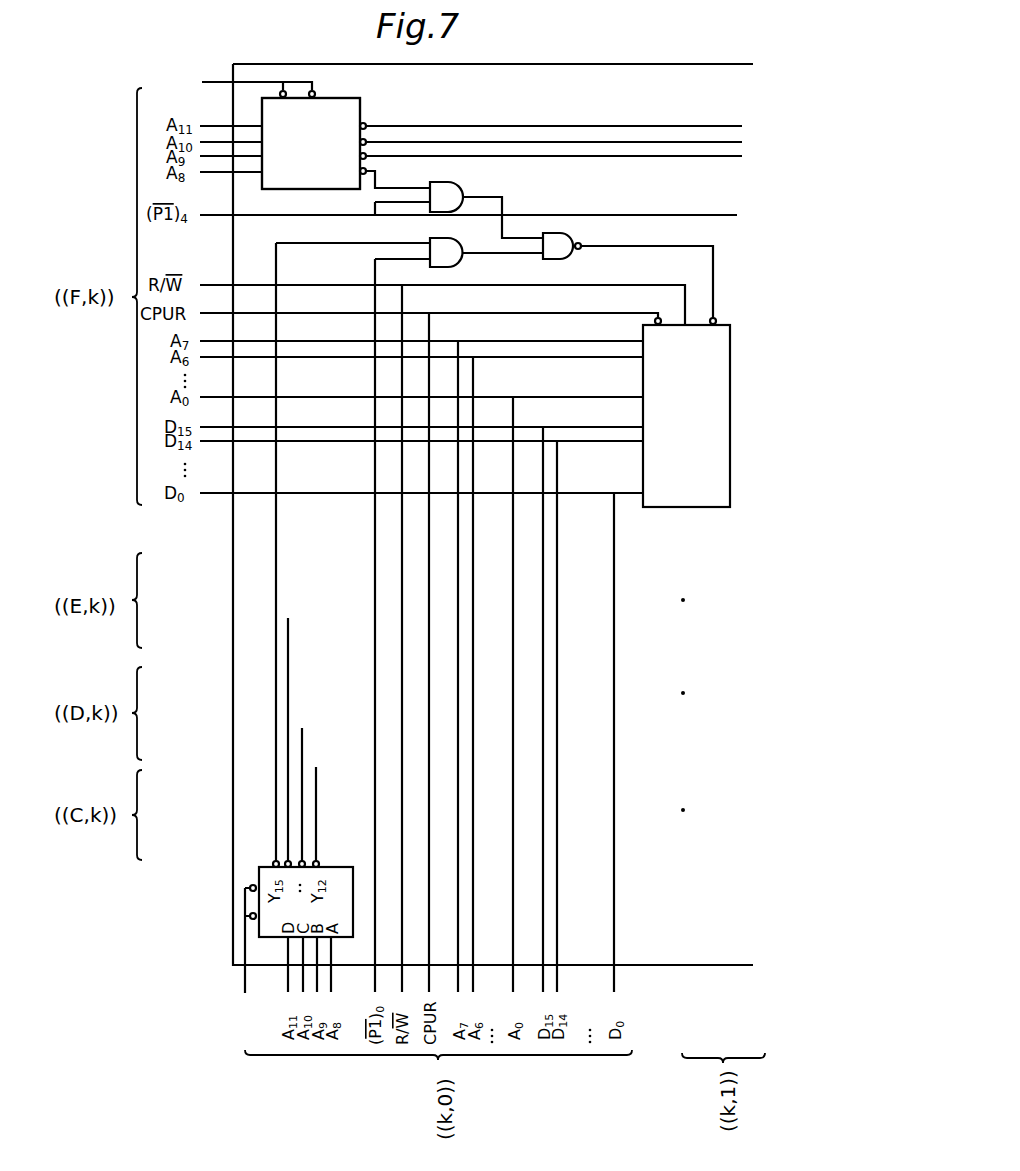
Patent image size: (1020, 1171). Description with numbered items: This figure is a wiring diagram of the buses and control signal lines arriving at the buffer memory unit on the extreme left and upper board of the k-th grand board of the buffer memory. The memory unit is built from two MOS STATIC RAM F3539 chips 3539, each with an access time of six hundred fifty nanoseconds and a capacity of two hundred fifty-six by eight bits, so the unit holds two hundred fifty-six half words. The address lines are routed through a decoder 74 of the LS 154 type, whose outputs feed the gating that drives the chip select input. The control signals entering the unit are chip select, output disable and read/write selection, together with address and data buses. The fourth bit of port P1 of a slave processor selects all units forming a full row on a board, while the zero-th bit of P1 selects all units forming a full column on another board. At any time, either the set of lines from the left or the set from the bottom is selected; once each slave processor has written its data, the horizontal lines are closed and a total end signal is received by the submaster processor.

The 74LS154 decoder (type number) 74 is at (311, 143).
The 74LS154 decoder (type number) 154 is at (311, 143).
The MOS static RAM F3539 3539 is at (686, 416).